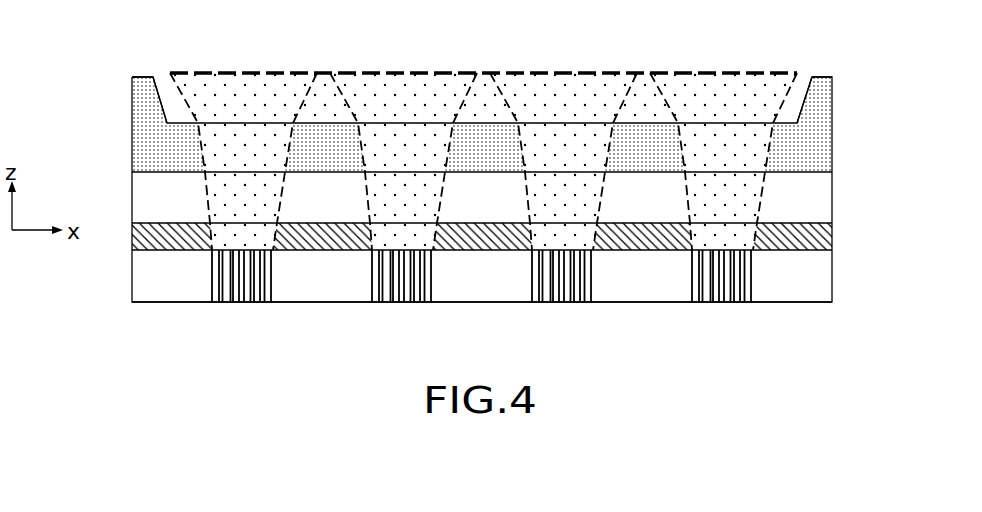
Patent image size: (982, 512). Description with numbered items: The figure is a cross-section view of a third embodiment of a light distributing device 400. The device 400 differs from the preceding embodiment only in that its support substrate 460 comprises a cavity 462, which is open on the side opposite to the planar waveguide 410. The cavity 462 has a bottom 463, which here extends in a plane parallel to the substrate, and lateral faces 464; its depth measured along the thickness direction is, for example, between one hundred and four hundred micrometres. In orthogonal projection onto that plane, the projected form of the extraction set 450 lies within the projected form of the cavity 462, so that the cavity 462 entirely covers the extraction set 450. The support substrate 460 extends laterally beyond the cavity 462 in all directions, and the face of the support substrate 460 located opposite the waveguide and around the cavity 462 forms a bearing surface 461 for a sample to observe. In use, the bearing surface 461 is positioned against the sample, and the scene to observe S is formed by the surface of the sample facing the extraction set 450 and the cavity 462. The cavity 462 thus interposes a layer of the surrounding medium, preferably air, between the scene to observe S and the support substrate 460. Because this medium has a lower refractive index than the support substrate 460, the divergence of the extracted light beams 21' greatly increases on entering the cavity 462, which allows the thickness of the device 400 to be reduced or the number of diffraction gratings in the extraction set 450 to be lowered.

The light distributing device 400 is at (96, 98).
The planar waveguide 410 is at (845, 172).
The extraction set 450 is at (753, 310).
The support substrate 460 is at (832, 128).
The bearing surface 461 is at (146, 77).
The cavity 462 is at (486, 89).
The bottom 463 is at (317, 123).
The lateral faces 464 is at (160, 103).
The beams 21' is at (483, 135).
The scene to observe S is at (562, 73).